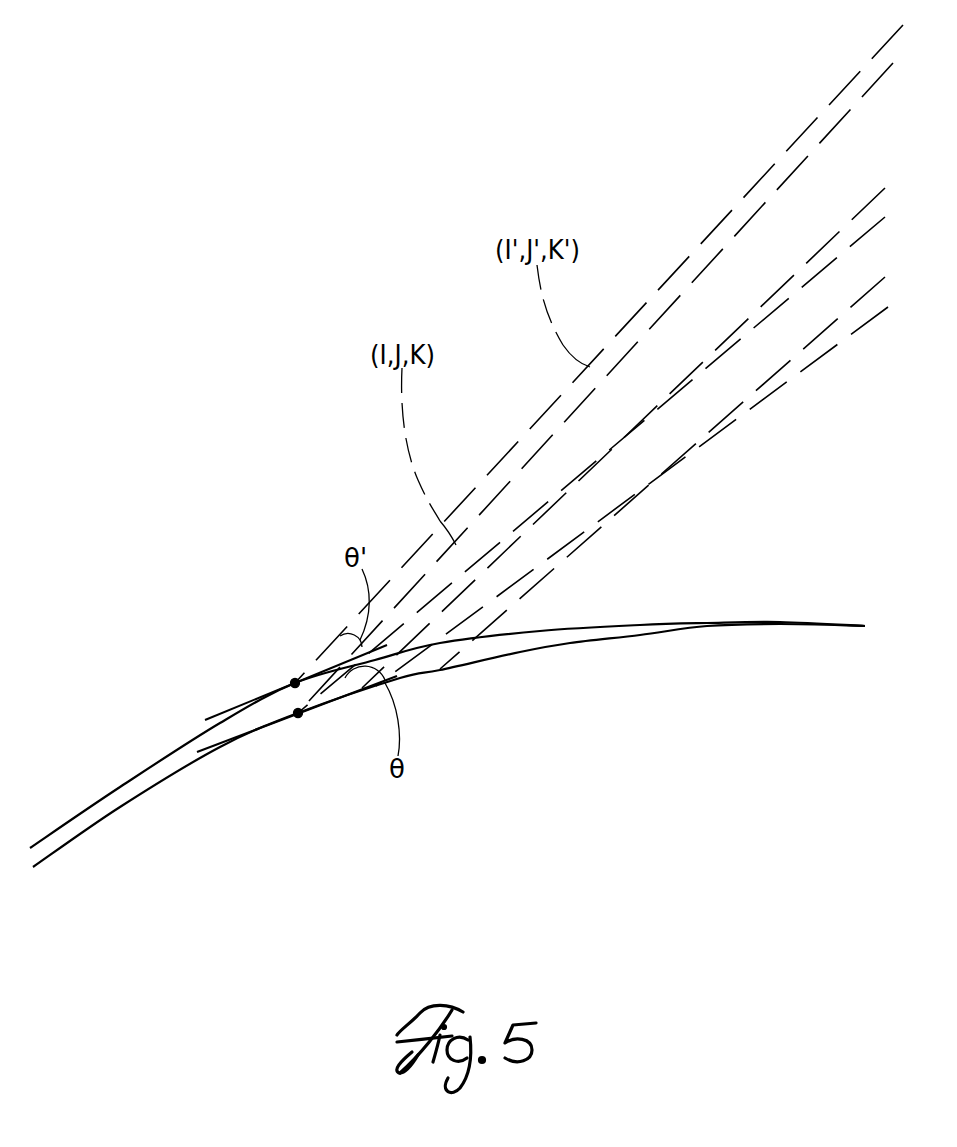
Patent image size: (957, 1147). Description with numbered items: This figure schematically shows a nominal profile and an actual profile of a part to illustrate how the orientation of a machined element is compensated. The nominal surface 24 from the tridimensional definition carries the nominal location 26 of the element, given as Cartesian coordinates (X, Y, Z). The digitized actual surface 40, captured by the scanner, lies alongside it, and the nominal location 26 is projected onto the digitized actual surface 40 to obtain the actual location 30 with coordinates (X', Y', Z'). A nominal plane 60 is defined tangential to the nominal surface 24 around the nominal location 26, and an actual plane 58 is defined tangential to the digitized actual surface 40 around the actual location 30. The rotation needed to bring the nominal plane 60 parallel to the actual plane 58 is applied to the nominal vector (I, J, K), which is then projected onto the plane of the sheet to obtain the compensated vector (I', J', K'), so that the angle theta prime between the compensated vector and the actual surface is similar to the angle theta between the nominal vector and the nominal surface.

The nominal surface 24 is at (107, 820).
The nominal location 26 is at (298, 713).
The actual location 30 is at (295, 683).
The digitized actual surface 40 is at (130, 776).
The actual plane 58 is at (205, 717).
The nominal plane 60 is at (192, 743).